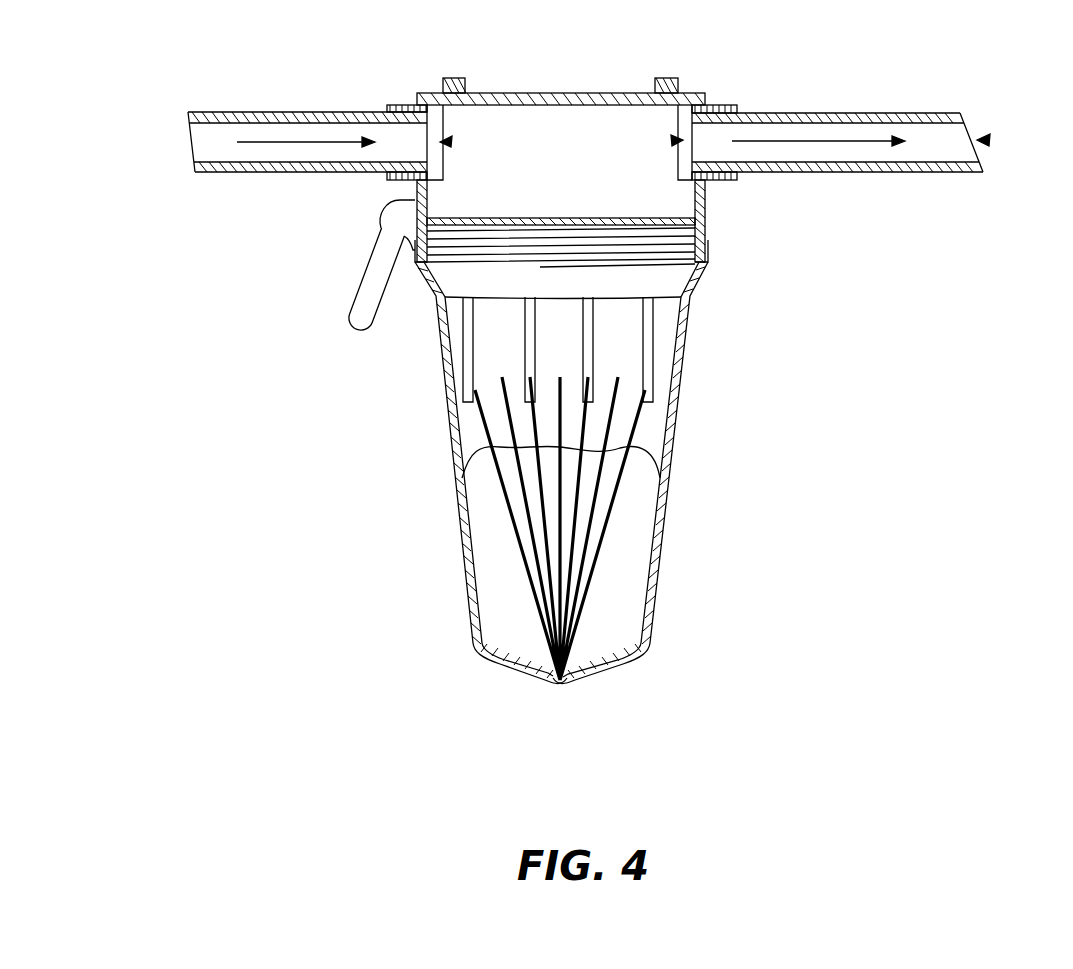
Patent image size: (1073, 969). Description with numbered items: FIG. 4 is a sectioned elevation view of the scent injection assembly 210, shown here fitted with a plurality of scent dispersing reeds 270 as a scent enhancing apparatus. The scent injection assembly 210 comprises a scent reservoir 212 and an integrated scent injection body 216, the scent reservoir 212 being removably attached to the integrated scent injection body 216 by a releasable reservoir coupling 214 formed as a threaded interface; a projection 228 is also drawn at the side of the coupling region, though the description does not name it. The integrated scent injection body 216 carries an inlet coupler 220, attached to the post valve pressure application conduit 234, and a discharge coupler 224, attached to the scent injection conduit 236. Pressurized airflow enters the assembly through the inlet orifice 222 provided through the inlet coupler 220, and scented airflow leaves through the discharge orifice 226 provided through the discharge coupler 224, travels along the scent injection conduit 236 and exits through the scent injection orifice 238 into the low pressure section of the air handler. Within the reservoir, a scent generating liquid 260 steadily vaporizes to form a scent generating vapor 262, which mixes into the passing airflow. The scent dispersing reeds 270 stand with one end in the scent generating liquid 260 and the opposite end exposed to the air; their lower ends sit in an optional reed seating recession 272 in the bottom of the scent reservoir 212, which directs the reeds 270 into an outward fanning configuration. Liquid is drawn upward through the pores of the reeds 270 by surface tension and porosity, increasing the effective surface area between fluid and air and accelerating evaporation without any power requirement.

The scent injection assembly 210 is at (543, 394).
The scent reservoir 212 is at (462, 558).
The releasable reservoir coupling 214 is at (707, 250).
The integrated scent injection body 216 is at (705, 203).
The inlet coupler 220 is at (406, 105).
The inlet orifice 222 is at (448, 141).
The discharge coupler 224 is at (724, 105).
The discharge orifice 226 is at (675, 141).
The handle 228 is at (361, 283).
The post valve pressure application conduit 234 is at (309, 112).
The scent injection conduit 236 is at (828, 113).
The scent injection orifice 238 is at (984, 138).
The scent generating liquid 260 is at (622, 577).
The scent generating vapor 262 is at (660, 357).
The scent dispersing reeds 270 is at (462, 478).
The reed seating recession 272 is at (556, 681).